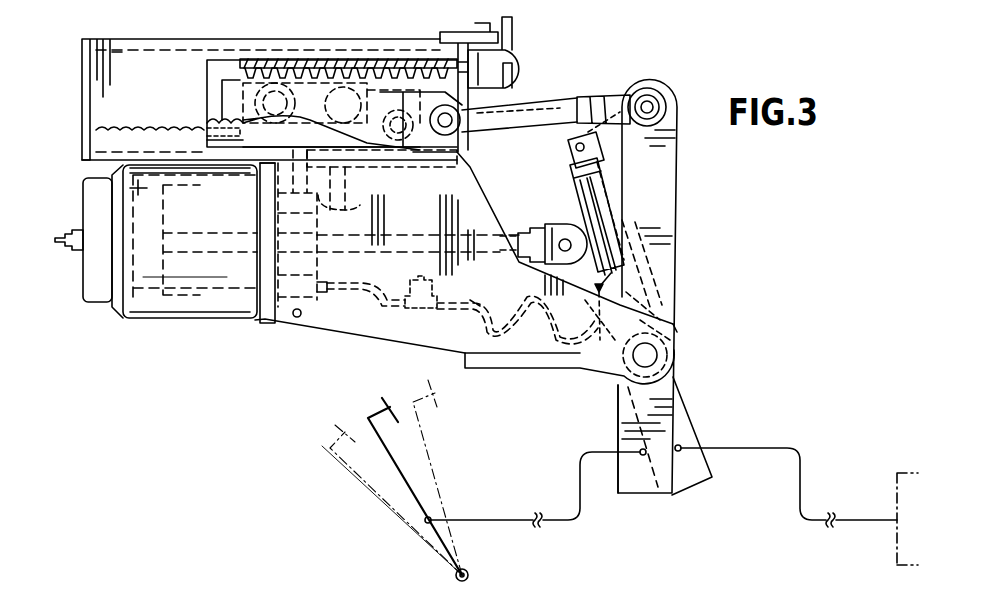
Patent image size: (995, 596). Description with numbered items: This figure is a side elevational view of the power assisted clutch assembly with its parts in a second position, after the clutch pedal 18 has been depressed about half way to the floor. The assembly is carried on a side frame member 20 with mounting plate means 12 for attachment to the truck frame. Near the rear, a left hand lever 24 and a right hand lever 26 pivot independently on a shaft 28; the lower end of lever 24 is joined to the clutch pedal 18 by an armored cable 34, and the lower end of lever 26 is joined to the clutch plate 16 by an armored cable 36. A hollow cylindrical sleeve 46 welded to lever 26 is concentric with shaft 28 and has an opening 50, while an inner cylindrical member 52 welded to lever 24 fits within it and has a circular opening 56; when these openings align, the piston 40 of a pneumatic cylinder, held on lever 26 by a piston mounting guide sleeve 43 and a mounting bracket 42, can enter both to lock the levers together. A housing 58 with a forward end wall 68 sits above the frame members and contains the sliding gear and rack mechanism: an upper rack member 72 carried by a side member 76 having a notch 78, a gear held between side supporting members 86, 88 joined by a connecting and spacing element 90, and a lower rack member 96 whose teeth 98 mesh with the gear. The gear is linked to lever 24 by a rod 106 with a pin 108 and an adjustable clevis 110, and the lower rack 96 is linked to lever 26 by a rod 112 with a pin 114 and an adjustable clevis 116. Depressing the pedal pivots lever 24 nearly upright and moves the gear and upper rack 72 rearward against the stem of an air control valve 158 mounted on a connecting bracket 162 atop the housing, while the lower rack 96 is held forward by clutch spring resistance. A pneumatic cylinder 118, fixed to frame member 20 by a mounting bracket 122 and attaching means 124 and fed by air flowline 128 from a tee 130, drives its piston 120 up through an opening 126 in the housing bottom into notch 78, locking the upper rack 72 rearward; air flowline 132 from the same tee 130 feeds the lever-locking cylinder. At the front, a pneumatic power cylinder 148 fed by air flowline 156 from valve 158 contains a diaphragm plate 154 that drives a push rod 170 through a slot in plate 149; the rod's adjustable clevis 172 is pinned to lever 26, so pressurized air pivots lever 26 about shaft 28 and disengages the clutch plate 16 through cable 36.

The mounting plate means 12 is at (495, 365).
The clutch plate 16 is at (899, 472).
The clutch pedal 18 is at (385, 395).
The side frame member 20 is at (342, 322).
The left hand lever 24 is at (626, 490).
The right hand lever 26 is at (696, 482).
The mounting shaft 28 is at (657, 357).
The armored cable 34 is at (578, 478).
The armored cable 36 is at (850, 524).
The piston 40 is at (665, 290).
The mounting bracket 42 is at (568, 152).
The piston mounting guide sleeve 43 is at (610, 260).
The hollow cylindrical sleeve 46 is at (678, 338).
The opening 50 is at (670, 268).
The inner cylindrical member 52 is at (608, 343).
The circular opening 56 is at (672, 320).
The housing 58 is at (165, 38).
The forward end wall 68 is at (82, 100).
The upper rack member 72 is at (236, 60).
The side carrying member 76 is at (207, 144).
The notch 78 is at (279, 174).
The side supporting member 86 is at (207, 97).
The side supporting member 88 is at (207, 74).
The connecting and spacing element 90 is at (328, 75).
The lower rack member 96 is at (207, 117).
The teeth 98 is at (580, 198).
The rod 106 is at (540, 97).
The pin 108 is at (440, 140).
The adjustable clevis 110 is at (622, 92).
The rod 112 is at (498, 130).
The pin 114 is at (392, 160).
The adjustable clevis 116 is at (570, 138).
The pneumatic cylinder 118 is at (328, 210).
The piston 120 is at (300, 130).
The mounting bracket 122 is at (290, 322).
The attaching means 124 is at (298, 318).
The opening 126 is at (340, 165).
The air flowline 128 is at (365, 278).
The tee 130 is at (420, 308).
The air flowline 132 is at (490, 290).
The pneumatic power cylinder 148 is at (200, 322).
The plate 149 is at (260, 325).
The diaphragm plate 154 is at (170, 213).
The air flowline 156 is at (60, 252).
The air control valve 158 is at (528, 60).
The connecting bracket 162 is at (455, 32).
The push rod 170 is at (428, 232).
The adjustable clevis 172 is at (545, 226).